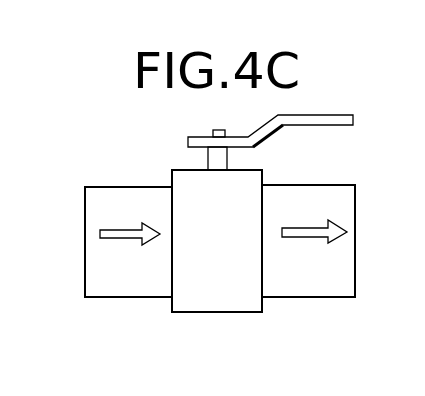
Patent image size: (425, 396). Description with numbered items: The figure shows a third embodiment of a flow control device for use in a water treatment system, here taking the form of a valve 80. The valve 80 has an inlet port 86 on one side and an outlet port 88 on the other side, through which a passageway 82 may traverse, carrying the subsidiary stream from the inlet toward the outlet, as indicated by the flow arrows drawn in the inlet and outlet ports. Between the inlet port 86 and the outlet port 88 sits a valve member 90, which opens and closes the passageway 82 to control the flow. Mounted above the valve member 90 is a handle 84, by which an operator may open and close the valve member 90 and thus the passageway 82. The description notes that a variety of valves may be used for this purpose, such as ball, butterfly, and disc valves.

The valve 80 is at (112, 157).
The passageway 82 is at (85, 237).
The handle 84 is at (338, 115).
The inlet port 86 is at (85, 278).
The outlet port 88 is at (355, 265).
The valve member 90 is at (208, 312).